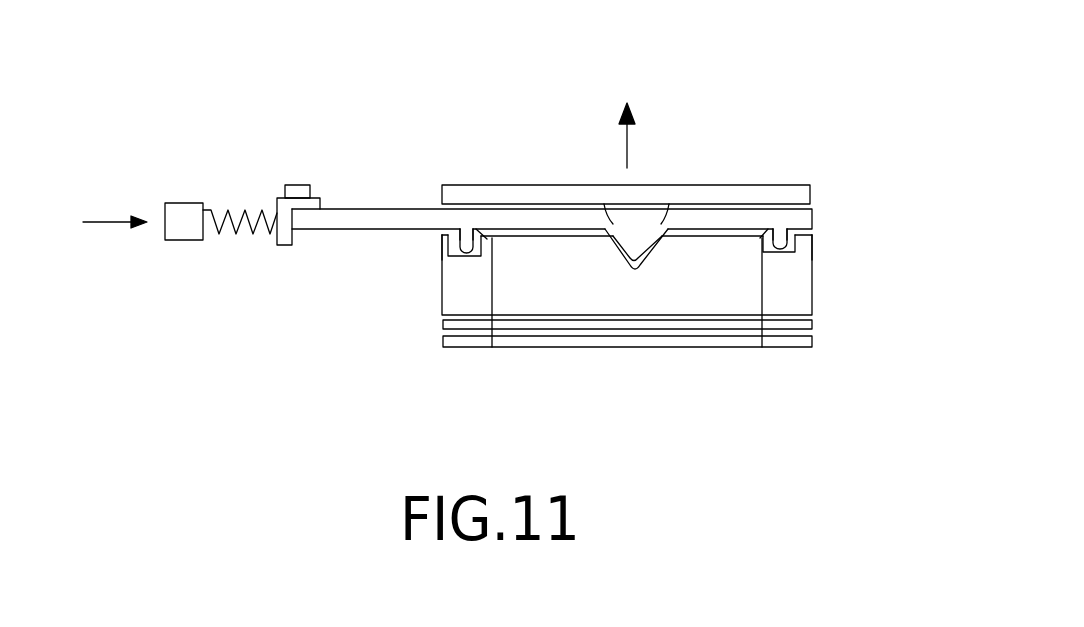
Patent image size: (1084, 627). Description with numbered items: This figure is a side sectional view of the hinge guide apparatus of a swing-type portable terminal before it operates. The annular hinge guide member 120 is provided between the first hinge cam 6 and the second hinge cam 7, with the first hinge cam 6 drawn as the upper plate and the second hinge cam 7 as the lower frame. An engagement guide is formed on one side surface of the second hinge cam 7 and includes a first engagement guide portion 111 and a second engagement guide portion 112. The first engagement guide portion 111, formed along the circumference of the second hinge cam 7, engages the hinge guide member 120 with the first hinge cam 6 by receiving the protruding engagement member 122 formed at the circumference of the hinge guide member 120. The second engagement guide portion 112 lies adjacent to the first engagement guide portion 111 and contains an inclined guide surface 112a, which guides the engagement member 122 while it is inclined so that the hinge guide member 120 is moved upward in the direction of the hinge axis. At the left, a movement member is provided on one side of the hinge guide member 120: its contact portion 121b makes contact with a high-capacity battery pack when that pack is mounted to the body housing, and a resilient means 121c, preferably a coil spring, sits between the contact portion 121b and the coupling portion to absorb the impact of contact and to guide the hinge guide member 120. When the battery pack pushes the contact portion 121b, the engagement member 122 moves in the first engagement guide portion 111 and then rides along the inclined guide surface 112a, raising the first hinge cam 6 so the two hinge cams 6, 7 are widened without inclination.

The first hinge cam 6 is at (779, 184).
The second hinge cam 7 is at (813, 302).
The first engagement guide portion 111 is at (444, 240).
The second engagement guide portion 112 is at (477, 227).
The inclined guide surface 112a is at (797, 247).
The hinge guide member 120 is at (358, 208).
The contact portion 121b is at (186, 228).
The resilient means 121c is at (238, 207).
The engagement member 122 is at (457, 231).